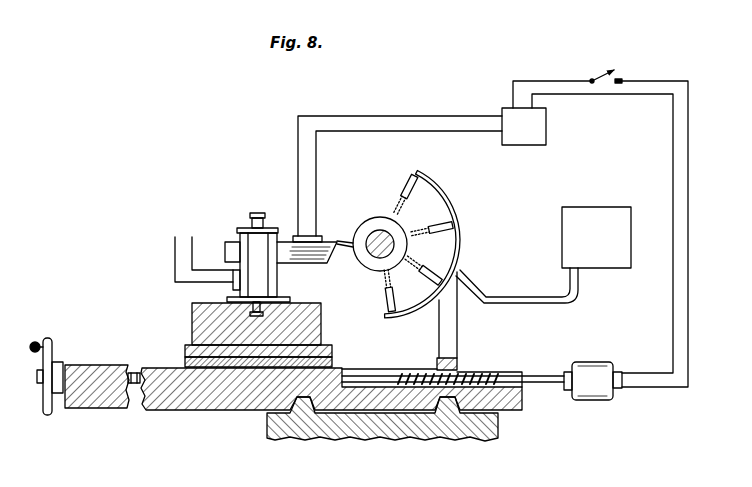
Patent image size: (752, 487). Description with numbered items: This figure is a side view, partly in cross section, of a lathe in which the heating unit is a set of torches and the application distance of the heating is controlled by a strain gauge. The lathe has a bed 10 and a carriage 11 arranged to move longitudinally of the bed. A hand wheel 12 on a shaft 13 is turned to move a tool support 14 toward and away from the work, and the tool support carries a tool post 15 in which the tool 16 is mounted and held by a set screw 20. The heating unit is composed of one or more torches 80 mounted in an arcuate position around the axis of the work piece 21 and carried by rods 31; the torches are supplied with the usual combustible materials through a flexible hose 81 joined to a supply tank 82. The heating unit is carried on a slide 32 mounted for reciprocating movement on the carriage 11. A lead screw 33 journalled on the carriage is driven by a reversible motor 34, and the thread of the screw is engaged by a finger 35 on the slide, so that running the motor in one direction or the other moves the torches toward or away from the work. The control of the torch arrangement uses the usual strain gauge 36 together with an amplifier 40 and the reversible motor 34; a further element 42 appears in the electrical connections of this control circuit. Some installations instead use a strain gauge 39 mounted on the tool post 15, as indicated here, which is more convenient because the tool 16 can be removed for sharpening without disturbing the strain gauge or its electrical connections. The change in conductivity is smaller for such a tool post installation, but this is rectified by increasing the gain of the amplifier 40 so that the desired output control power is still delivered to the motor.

The bed 10 is at (487, 438).
The carriage 11 is at (193, 410).
The hand wheel 12 is at (47, 415).
The shaft 13 is at (133, 372).
The tool support 14 is at (321, 341).
The tool post 15 is at (277, 288).
The tool 16 is at (334, 265).
The set screw 20 is at (253, 213).
The work piece 21 is at (383, 218).
The terminal rods 31 is at (443, 318).
The slide 32 is at (459, 360).
The lead screw 33 is at (386, 377).
The reversible motor 34 is at (585, 363).
The finger 35 is at (476, 373).
The strain gauge 36 is at (305, 236).
The strain gauge 39 is at (233, 273).
The amplifier 40 is at (545, 141).
The switch 42 is at (606, 74).
The torches 80 is at (474, 223).
The flexible hose 81 is at (530, 297).
The supply tank 82 is at (592, 207).